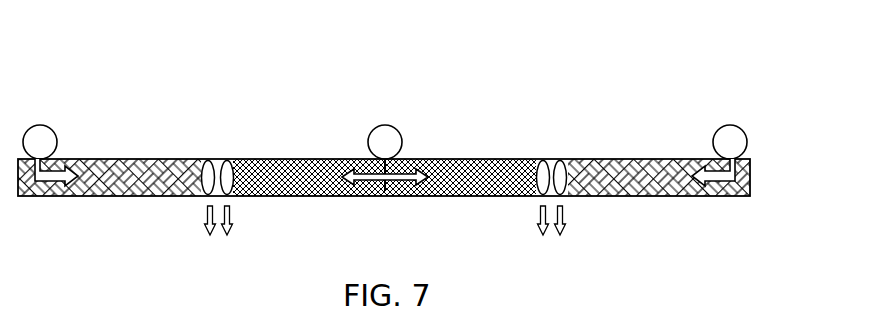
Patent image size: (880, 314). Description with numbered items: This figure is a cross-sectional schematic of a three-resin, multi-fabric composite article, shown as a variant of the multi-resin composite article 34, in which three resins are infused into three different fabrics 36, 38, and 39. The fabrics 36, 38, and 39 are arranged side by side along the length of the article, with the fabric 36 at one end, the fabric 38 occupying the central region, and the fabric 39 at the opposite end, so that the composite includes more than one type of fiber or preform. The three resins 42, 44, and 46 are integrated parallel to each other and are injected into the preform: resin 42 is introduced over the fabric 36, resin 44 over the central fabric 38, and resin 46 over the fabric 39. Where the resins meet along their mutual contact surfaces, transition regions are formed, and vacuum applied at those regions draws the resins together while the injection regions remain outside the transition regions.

The multi-resin composite article 34 is at (688, 69).
The fabric 36 is at (146, 185).
The fabric 38 is at (334, 184).
The fabric 39 is at (653, 187).
The resin 42 is at (39, 143).
The resin 44 is at (383, 143).
The resin 46 is at (728, 143).